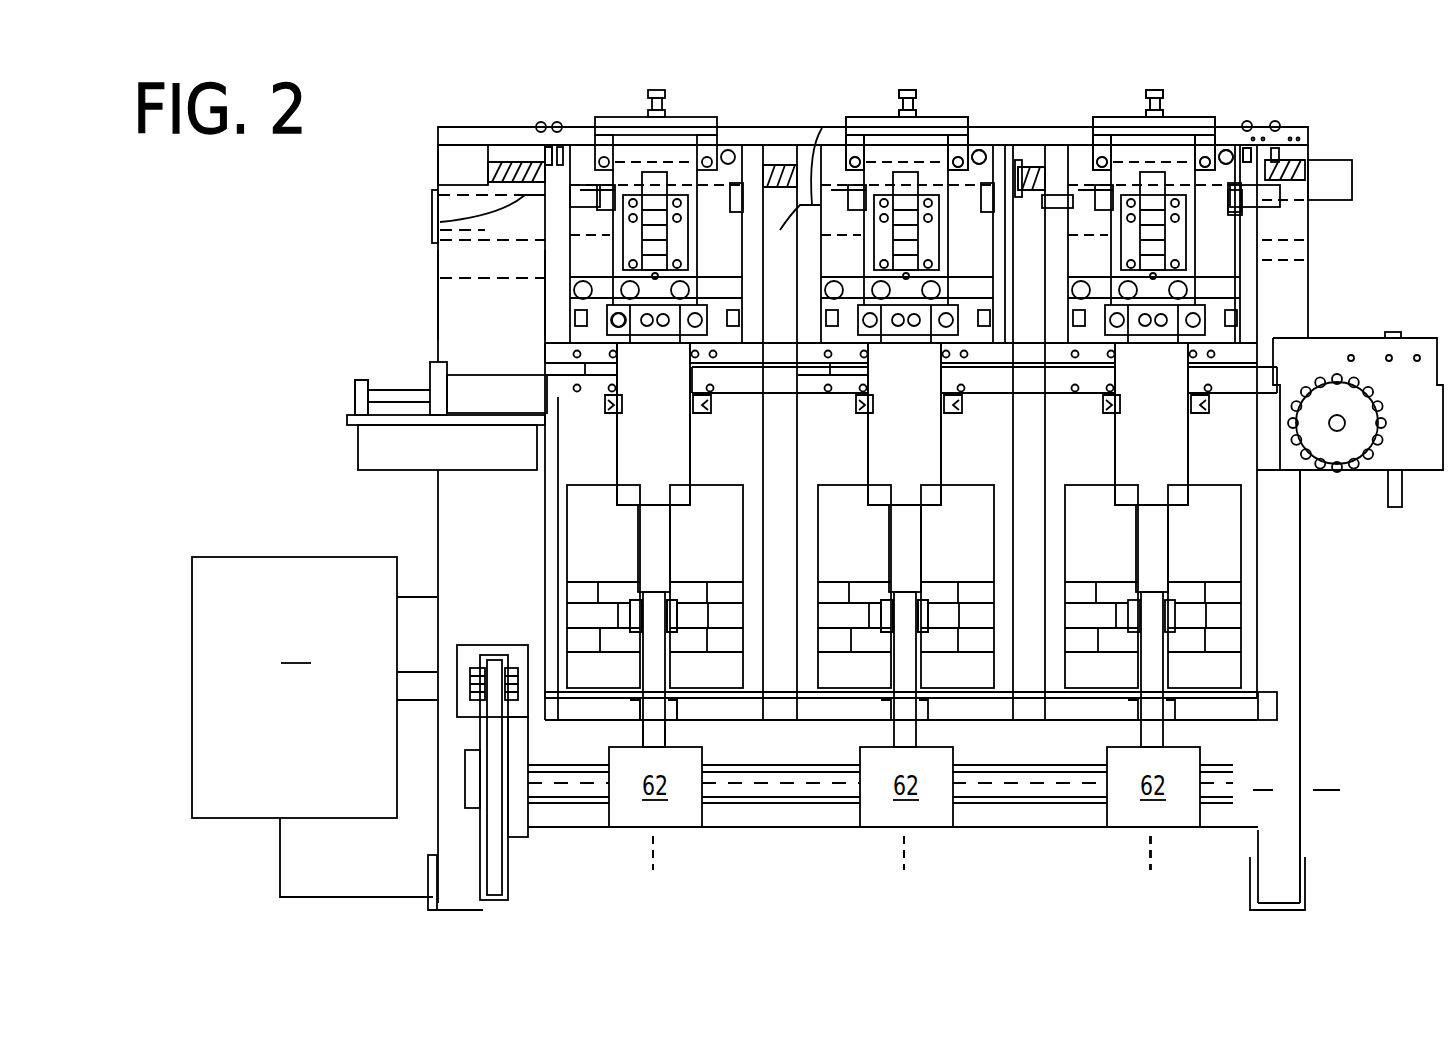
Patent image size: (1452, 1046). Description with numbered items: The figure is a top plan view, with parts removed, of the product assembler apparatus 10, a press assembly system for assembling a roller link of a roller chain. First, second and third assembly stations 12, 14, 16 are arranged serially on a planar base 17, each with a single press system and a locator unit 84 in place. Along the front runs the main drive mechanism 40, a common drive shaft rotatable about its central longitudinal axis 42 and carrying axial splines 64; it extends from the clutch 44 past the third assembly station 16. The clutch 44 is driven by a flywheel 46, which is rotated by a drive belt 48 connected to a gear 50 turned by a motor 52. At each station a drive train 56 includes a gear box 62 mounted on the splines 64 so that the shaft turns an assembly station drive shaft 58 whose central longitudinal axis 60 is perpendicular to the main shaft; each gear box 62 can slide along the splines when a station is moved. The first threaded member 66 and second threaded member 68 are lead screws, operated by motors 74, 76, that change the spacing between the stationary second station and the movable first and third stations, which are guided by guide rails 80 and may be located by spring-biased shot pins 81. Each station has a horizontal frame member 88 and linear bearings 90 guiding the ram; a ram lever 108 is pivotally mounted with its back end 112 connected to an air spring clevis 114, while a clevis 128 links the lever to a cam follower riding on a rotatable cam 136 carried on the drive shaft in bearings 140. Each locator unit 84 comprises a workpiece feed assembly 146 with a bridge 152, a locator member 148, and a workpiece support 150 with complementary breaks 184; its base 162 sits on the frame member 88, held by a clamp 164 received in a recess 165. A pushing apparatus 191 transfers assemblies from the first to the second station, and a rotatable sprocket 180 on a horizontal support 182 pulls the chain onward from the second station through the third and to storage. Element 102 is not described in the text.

The product assembler apparatus 10 is at (1258, 633).
The first assembly station 12 is at (550, 313).
The second assembly station 14 is at (850, 128).
The third assembly station 16 is at (1092, 128).
The planar base 17 is at (438, 293).
The main drive mechanism 40 is at (775, 800).
The central longitudinal axis 42 is at (1330, 790).
The clutch 44 is at (530, 838).
The flywheel 46 is at (510, 875).
The drive belt 48 is at (495, 905).
The gear 50 is at (468, 665).
The motor 52 is at (314, 727).
The drive train 56 is at (690, 480).
The assembly station drive shaft 58 is at (645, 735).
The central longitudinal axis 60 is at (660, 850).
The gear box 62 is at (904, 785).
The axial splines 64 is at (800, 765).
The first threaded member 66 is at (517, 160).
The second threaded member 68 is at (1030, 167).
The motor 74 is at (438, 160).
The motor 76 is at (1352, 172).
The guide rails 80 is at (1238, 128).
The spring-biased shot pins 81 is at (563, 125).
The locator unit 84 is at (700, 130).
The horizontal frame member 88 is at (546, 260).
The linear bearings 90 is at (600, 415).
The slide block 102 is at (650, 370).
The ram lever 108 is at (660, 525).
The back end 112 is at (668, 745).
The air spring clevis 114 is at (680, 705).
The clevis 128 is at (625, 600).
The rotatable cam 136 is at (620, 615).
The bearings 140 is at (720, 590).
The workpiece feed assembly 146 is at (600, 330).
The locator member 148 is at (660, 270).
The workpiece support 150 is at (778, 398).
The bridge 152 is at (608, 314).
The base 162 is at (580, 207).
The clamp 164 is at (440, 222).
The recess 165 is at (822, 195).
The rotatable sprocket 180 is at (1345, 465).
The horizontal support 182 is at (1420, 480).
The breaks 184 is at (778, 360).
The pushing apparatus 191 is at (395, 390).